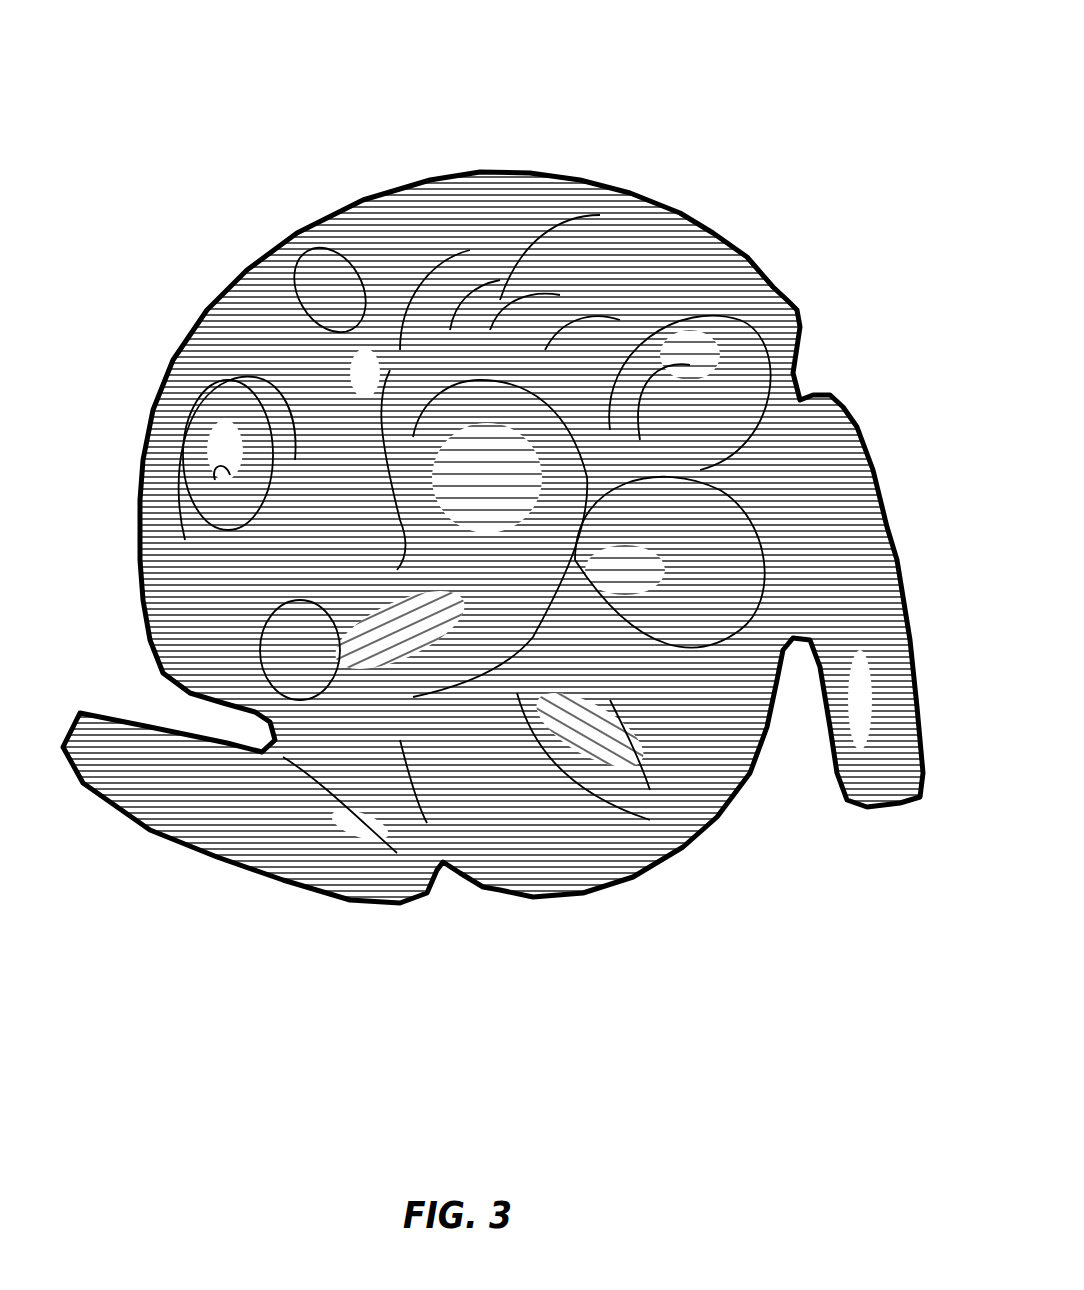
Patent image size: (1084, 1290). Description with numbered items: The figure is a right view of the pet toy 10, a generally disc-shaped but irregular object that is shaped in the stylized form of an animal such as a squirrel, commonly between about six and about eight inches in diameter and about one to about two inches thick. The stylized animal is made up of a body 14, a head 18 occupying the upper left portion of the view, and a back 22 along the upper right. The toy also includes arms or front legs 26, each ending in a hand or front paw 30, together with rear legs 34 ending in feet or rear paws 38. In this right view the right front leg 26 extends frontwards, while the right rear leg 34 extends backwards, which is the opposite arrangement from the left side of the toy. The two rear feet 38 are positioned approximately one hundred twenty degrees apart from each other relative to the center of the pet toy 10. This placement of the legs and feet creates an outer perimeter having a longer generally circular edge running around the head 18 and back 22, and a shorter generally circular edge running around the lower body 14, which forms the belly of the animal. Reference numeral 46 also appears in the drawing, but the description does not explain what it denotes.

The pet toy 10 is at (413, 222).
The body 14 is at (560, 813).
The head 18 is at (212, 392).
The back 22 is at (573, 246).
The arm (front leg) 26 is at (412, 582).
The hand/front paw 30 is at (290, 664).
The rear leg 34 is at (672, 643).
The foot/rear paw 38 is at (160, 778).
The arm 46 is at (832, 447).